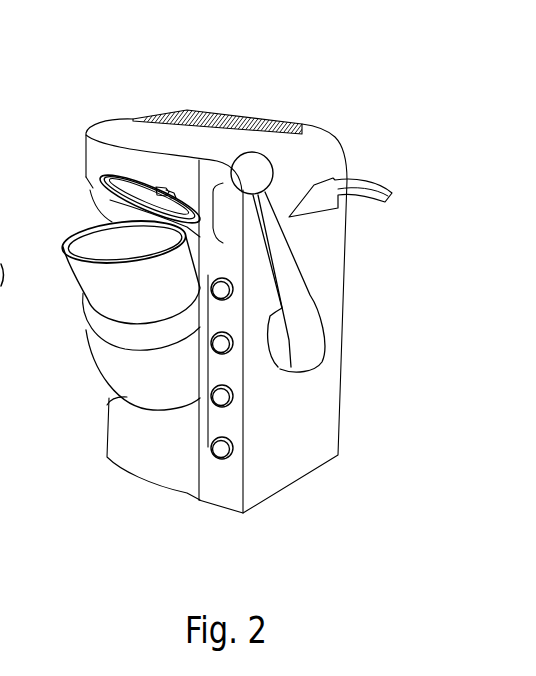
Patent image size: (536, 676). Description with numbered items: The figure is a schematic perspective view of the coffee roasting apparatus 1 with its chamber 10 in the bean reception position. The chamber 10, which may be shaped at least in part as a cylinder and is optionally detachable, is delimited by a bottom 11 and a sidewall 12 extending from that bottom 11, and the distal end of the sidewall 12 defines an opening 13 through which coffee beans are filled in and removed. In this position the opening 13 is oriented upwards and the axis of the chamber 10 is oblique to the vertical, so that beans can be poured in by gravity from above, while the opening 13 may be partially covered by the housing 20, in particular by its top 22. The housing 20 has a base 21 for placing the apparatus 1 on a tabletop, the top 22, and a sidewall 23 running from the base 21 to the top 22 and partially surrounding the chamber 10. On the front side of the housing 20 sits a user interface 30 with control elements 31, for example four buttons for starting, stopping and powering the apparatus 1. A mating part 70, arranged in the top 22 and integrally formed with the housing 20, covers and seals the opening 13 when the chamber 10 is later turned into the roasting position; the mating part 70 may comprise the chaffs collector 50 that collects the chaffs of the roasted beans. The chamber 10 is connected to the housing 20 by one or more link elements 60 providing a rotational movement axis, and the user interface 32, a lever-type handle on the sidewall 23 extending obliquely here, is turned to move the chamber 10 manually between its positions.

The apparatus 1 is at (334, 34).
The chamber 10 is at (98, 231).
The bottom 11 is at (106, 394).
The sidewall 12 is at (137, 287).
The opening 13 is at (67, 238).
The housing 20 is at (366, 337).
The base 21 is at (113, 433).
The top 22 is at (145, 160).
The sidewall 23 is at (278, 430).
The user interface 30 is at (218, 491).
The control elements 31 is at (279, 432).
The user interface 32 is at (297, 303).
The chaffs collector 50 is at (192, 93).
The link elements 60 is at (184, 386).
The mating part 70 is at (160, 192).